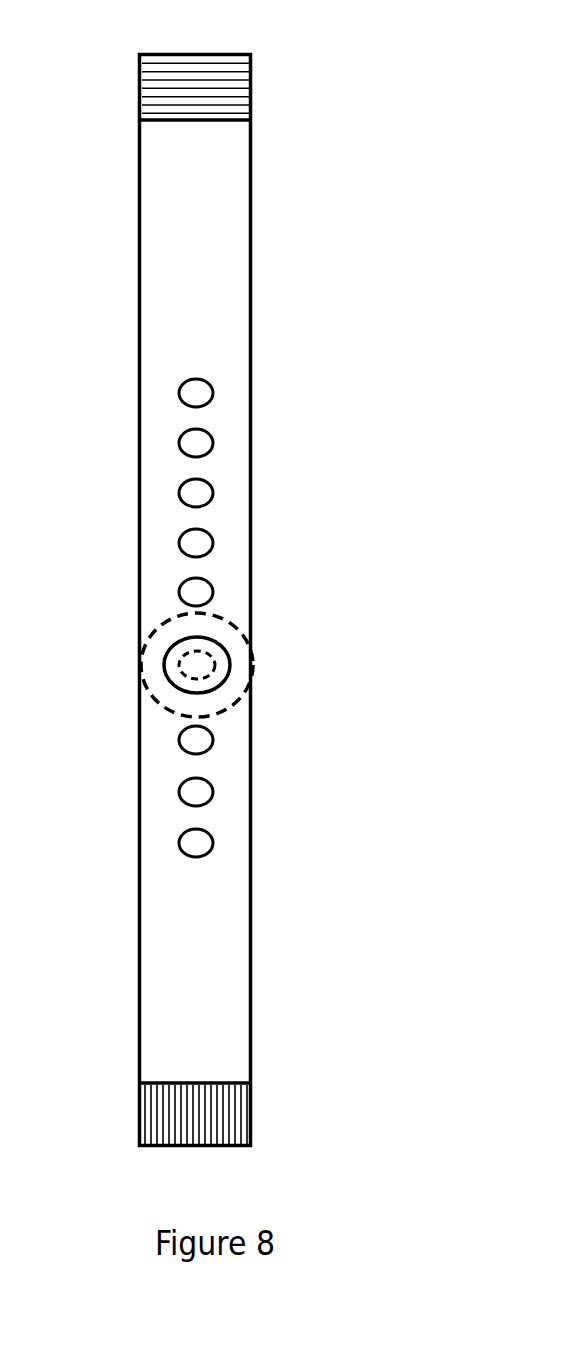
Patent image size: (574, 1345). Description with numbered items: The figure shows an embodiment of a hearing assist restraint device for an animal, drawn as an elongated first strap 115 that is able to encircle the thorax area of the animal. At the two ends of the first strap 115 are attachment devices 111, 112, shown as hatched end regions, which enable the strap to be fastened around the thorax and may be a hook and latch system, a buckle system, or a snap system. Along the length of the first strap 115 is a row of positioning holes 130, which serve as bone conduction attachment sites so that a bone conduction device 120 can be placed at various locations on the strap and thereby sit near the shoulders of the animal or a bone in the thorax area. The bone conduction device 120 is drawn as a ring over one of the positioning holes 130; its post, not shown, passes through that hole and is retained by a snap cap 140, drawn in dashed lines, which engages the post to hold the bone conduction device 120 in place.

The attachment device 111 is at (205, 88).
The attachment device 112 is at (205, 1115).
The first strap 115 is at (218, 301).
The bone conduction device 120 is at (238, 665).
The positioning hole 130 is at (205, 547).
The snap cap 140 is at (186, 672).